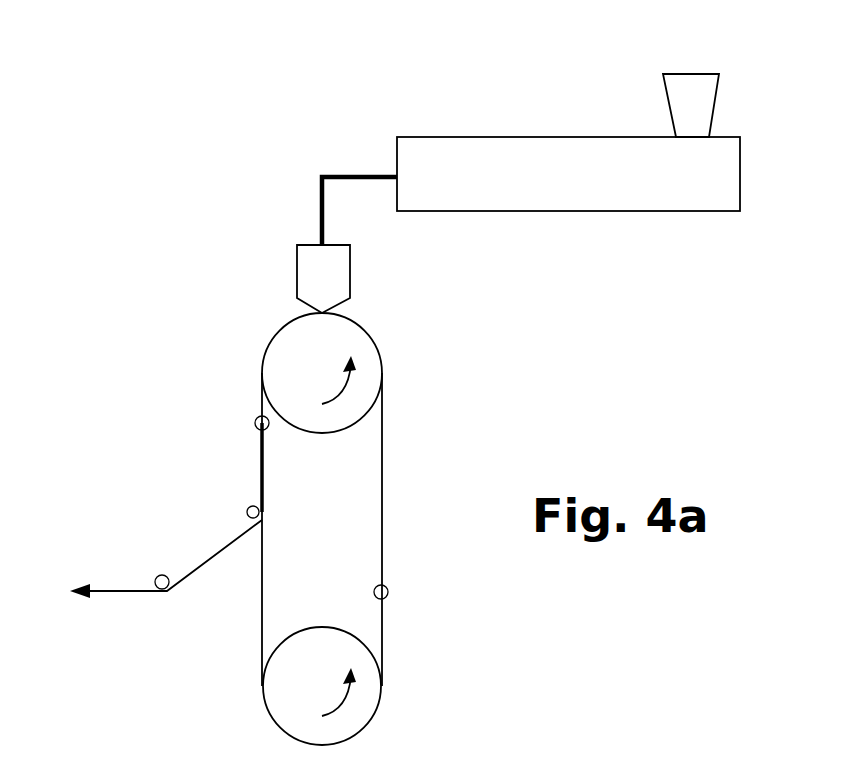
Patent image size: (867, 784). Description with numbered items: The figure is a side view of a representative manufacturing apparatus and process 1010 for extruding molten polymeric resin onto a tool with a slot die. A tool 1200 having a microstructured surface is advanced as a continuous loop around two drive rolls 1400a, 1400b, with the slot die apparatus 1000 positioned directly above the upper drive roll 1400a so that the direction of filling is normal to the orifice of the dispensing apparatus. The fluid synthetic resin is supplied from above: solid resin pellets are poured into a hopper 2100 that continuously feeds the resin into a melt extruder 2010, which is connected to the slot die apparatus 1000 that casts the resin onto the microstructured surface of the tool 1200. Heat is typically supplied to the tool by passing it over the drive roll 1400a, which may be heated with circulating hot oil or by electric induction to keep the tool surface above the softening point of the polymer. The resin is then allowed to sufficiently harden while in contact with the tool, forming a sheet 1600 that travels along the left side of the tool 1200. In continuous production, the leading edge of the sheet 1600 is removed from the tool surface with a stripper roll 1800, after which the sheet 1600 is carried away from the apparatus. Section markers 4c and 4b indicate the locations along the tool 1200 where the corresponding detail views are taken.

The manufacturing apparatus and process 1010 is at (368, 48).
The extruder 2010 is at (530, 143).
The hopper 2100 is at (711, 103).
The slot die apparatus 1000 is at (340, 276).
The drive roll 1400a is at (365, 357).
The drive roll 1400b is at (360, 712).
The tool 1200 is at (382, 498).
The sheet 1600 is at (262, 463).
The stripper roll 1800 is at (250, 507).
The section marker 4c is at (255, 420).
The section marker 4b is at (388, 590).